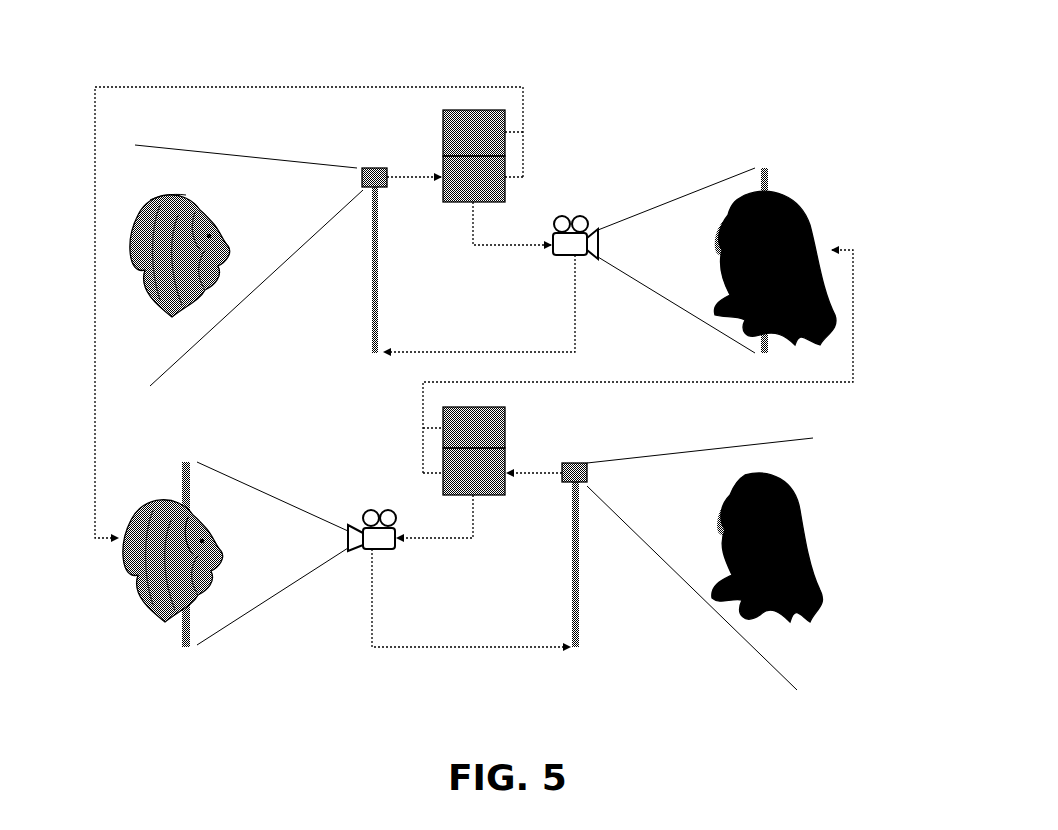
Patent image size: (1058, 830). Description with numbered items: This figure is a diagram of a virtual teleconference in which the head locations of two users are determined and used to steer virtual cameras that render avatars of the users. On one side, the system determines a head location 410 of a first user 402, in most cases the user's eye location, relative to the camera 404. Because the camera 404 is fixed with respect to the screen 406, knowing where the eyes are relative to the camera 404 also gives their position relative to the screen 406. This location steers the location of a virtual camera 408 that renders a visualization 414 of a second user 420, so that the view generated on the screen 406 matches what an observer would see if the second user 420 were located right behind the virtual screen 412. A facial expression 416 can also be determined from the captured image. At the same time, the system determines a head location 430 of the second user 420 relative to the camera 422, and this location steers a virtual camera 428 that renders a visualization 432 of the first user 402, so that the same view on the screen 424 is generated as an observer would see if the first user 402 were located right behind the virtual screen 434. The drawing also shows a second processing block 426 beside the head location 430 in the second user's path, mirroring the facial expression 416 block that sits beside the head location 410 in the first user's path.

The first user 402 is at (145, 197).
The camera 404 is at (367, 170).
The screen 406 is at (367, 268).
The virtual camera 408 is at (597, 223).
The head location 410 is at (505, 165).
The virtual screen 412 is at (765, 168).
The visualization 414 is at (813, 227).
The facial expression 416 is at (475, 110).
The second user 420 is at (813, 530).
The camera 422 is at (583, 470).
The screen 424 is at (573, 587).
The feature extraction module FE 426 is at (455, 407).
The virtual camera 428 is at (360, 517).
The head location 430 is at (505, 457).
The visualization 432 is at (145, 498).
The virtual screen 434 is at (180, 633).